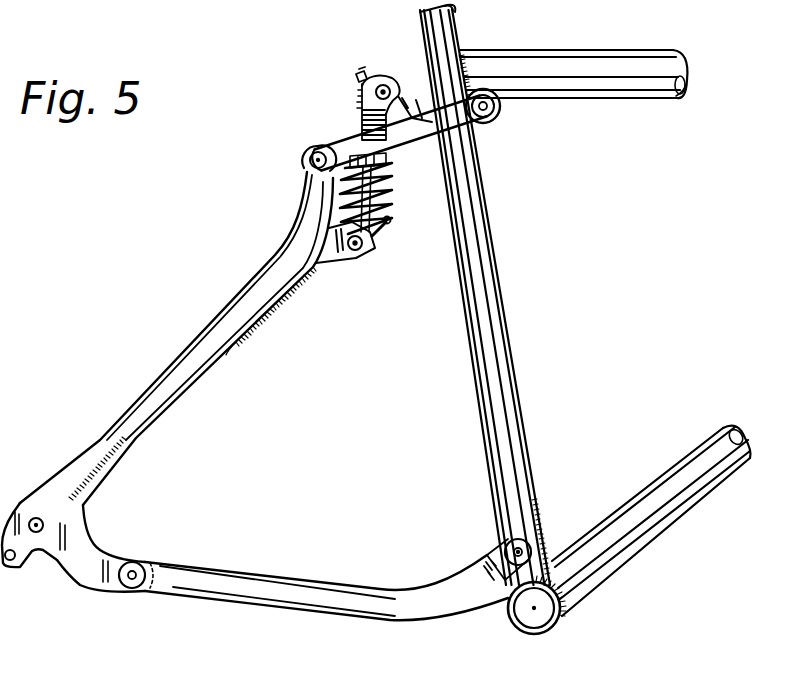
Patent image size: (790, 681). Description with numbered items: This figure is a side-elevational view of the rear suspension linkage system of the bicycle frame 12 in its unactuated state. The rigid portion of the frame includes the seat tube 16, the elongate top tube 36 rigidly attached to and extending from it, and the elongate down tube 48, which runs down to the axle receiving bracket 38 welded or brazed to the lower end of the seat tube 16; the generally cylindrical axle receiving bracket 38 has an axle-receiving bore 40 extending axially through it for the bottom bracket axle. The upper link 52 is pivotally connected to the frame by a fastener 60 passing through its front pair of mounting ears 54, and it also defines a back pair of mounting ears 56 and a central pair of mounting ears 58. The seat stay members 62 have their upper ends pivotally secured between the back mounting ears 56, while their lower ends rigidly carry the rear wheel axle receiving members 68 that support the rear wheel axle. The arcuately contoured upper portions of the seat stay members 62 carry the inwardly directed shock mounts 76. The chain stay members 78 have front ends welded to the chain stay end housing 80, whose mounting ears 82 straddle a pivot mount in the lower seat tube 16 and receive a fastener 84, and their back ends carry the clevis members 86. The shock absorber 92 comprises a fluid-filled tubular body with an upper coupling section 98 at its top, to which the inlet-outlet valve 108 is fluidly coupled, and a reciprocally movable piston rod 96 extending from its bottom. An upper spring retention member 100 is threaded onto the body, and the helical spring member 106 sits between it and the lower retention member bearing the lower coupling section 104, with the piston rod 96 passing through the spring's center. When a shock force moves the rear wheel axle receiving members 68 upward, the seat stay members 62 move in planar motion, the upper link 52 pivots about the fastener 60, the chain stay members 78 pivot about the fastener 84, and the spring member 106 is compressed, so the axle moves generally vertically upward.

The bicycle frame 12 is at (625, 39).
The seat tube 16 is at (497, 352).
The top tube 36 is at (643, 91).
The axle receiving bracket 38 is at (508, 624).
The axle-receiving bore 40 is at (534, 612).
The down tube 48 is at (690, 498).
The upper link 52 is at (312, 140).
The front pair of mounting ears 54 is at (500, 118).
The back pair of mounting ears 56 is at (306, 172).
The central pair of mounting ears 58 is at (397, 86).
The fastener 60 is at (487, 100).
The seat stay members 62 is at (182, 325).
The rear wheel axle receiving members 68 is at (72, 567).
The shock mounts 76 is at (340, 260).
The chain stay members 78 is at (294, 600).
The chain stay end housing 80 is at (546, 519).
The mounting ears 82 is at (500, 545).
The fastener 84 is at (475, 567).
The clevis members 86 is at (153, 551).
The shock absorber 92 is at (343, 158).
The piston rod 96 is at (384, 232).
The upper coupling section 98 is at (366, 100).
The upper spring retention member 100 is at (412, 157).
The lower coupling section 104 is at (372, 250).
The helical spring member 106 is at (384, 194).
The inlet-outlet valve 108 is at (360, 77).